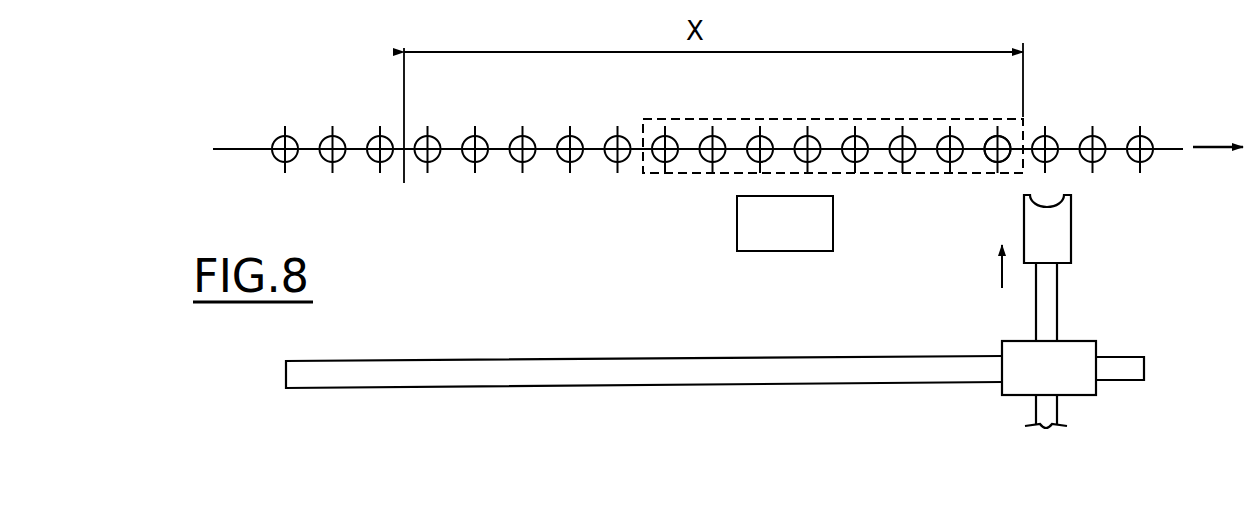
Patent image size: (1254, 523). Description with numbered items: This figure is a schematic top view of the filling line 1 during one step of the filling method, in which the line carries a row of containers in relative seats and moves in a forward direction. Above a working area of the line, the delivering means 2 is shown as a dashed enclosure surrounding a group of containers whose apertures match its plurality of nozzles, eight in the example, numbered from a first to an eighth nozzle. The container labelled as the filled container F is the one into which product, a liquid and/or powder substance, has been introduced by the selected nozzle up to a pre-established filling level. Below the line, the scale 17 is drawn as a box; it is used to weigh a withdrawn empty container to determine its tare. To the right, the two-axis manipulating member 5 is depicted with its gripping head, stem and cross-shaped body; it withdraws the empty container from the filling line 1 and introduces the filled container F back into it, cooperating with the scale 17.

The filling line 1 is at (239, 146).
The delivering means 2 is at (652, 186).
The filled container F is at (988, 162).
The scale 17 is at (798, 236).
The two-axis manipulating member 5 is at (1106, 265).